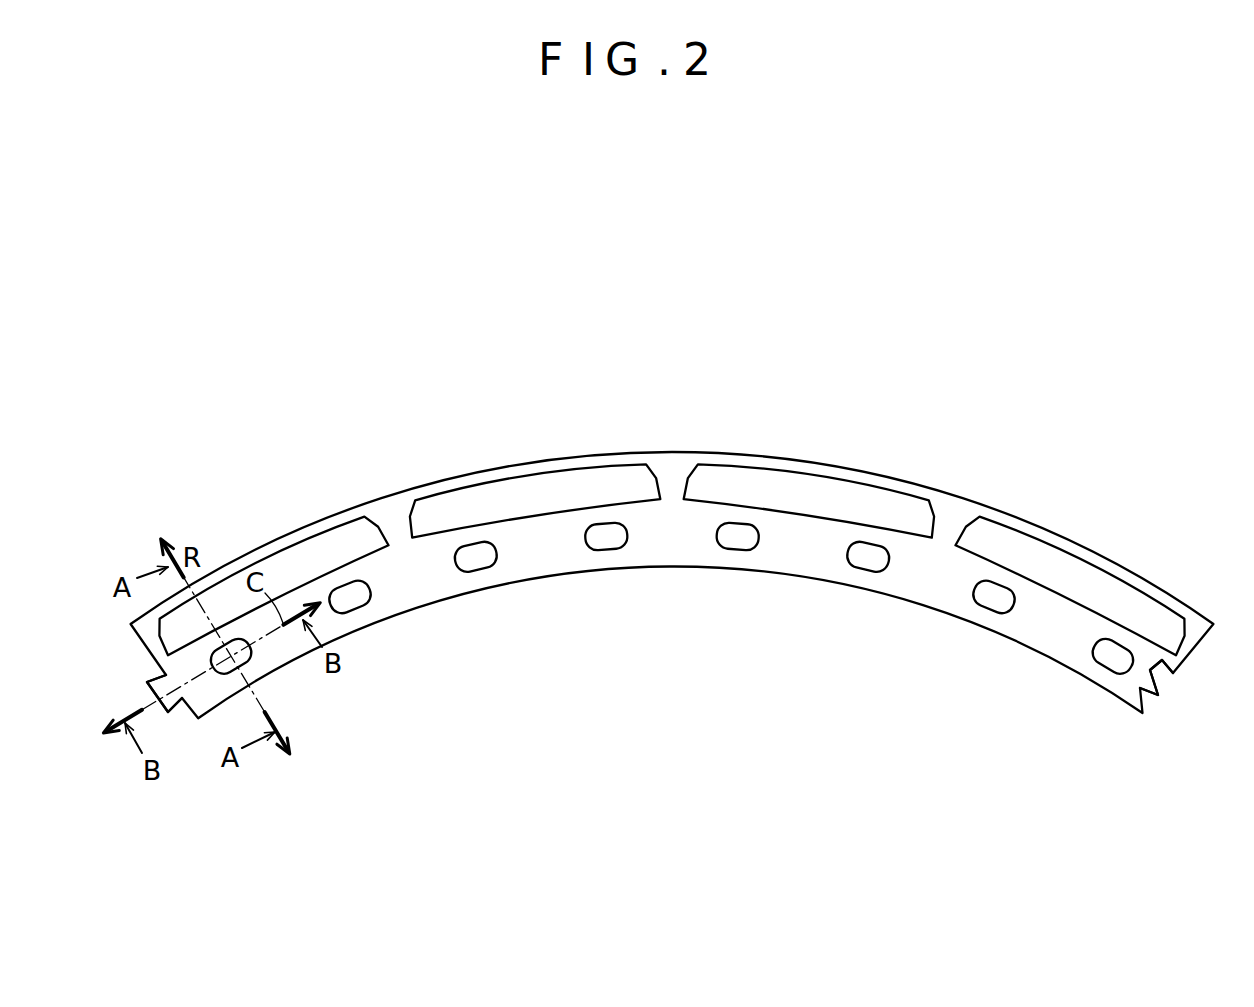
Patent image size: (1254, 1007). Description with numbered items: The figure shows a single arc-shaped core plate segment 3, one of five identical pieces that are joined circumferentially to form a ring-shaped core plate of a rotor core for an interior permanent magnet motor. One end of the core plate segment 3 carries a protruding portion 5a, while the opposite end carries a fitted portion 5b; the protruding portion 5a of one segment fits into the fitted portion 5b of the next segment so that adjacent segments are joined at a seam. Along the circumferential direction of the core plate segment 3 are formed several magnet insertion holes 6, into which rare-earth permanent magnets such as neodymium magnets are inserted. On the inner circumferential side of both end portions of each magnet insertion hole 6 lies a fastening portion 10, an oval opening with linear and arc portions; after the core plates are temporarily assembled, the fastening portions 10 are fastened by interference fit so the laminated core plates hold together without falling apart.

The core plate segment 3 is at (676, 333).
The magnet insertion hole 6 is at (516, 487).
The fastening portion 10 is at (737, 550).
The protruding portion 5a is at (150, 683).
The fitted portion 5b is at (1150, 677).